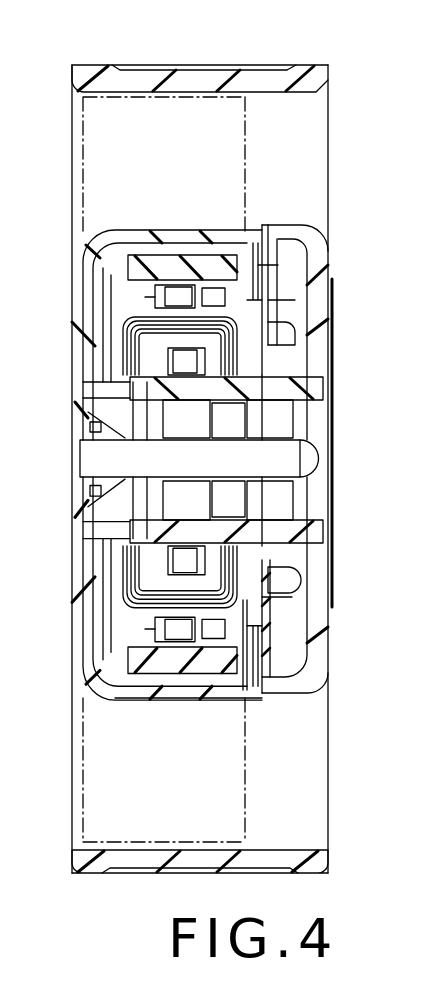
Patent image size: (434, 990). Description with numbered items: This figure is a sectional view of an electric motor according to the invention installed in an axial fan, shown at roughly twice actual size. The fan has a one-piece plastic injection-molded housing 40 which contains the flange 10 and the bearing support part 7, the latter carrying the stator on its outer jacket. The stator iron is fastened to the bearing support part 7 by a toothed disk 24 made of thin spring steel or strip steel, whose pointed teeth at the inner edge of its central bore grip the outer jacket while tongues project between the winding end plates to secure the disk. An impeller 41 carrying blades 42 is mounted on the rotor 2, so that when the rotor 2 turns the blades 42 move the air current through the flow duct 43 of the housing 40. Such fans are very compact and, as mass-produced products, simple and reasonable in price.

The rotor 2 is at (245, 228).
The bearing support part 7 is at (273, 388).
The flange 10 is at (320, 623).
The toothed disk 24 is at (148, 437).
The housing 40 is at (237, 72).
The impeller 41 is at (157, 693).
The blades 42 is at (158, 110).
The flow duct 43 is at (270, 95).